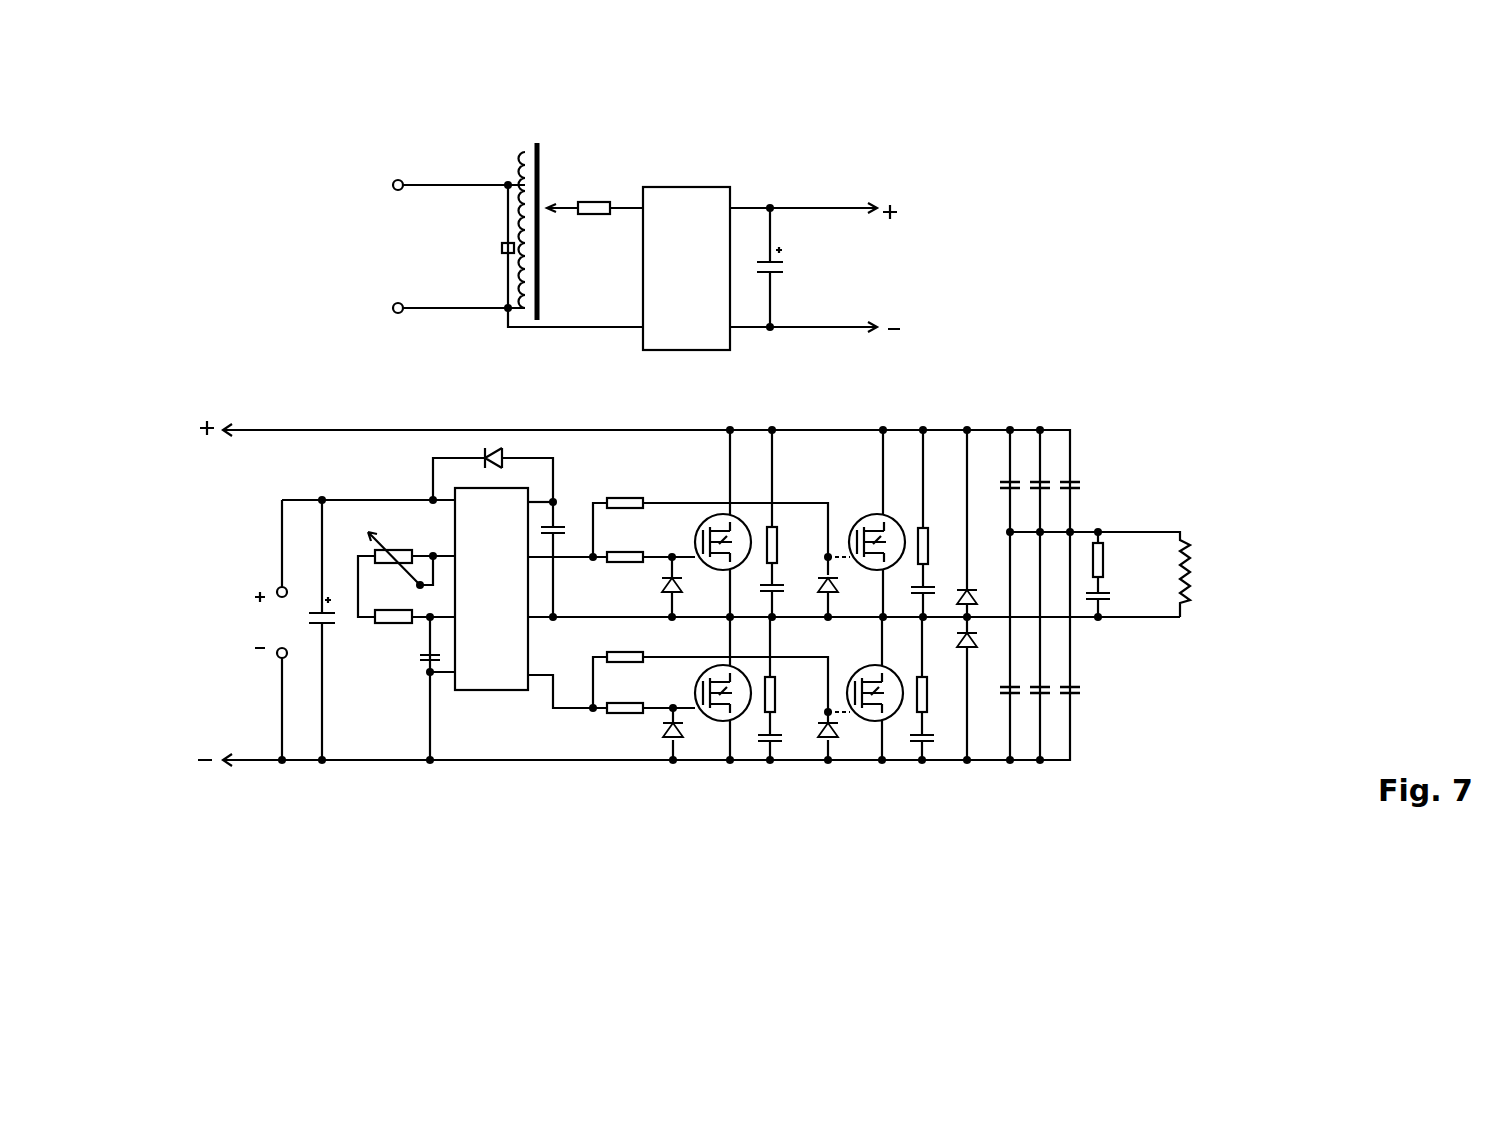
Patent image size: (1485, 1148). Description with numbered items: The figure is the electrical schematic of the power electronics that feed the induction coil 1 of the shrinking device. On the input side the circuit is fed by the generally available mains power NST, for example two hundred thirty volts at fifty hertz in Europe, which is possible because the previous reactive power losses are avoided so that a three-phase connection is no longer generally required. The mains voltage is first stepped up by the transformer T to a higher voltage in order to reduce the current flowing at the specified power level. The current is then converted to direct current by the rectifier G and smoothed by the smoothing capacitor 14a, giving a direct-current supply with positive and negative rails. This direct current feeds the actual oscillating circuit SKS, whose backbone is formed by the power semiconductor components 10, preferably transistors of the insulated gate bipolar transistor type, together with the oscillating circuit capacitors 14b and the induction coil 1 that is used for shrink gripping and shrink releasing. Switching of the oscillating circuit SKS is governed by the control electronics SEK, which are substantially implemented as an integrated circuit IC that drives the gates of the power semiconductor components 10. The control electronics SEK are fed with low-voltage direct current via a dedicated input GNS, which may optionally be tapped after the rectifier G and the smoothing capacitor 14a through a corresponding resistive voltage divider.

The induction coil 1 is at (1193, 567).
The power semiconductor component 10 is at (710, 523).
The smoothing capacitor 14a is at (793, 262).
The oscillating circuit capacitor 14b is at (1010, 482).
The transformer T is at (528, 142).
The rectifier G is at (681, 190).
The mains power NST is at (363, 250).
The low-voltage DC power supply GNS is at (263, 622).
The integrated circuit IC is at (454, 666).
The control electronics SEK is at (442, 708).
The oscillating circuit SKS is at (897, 618).